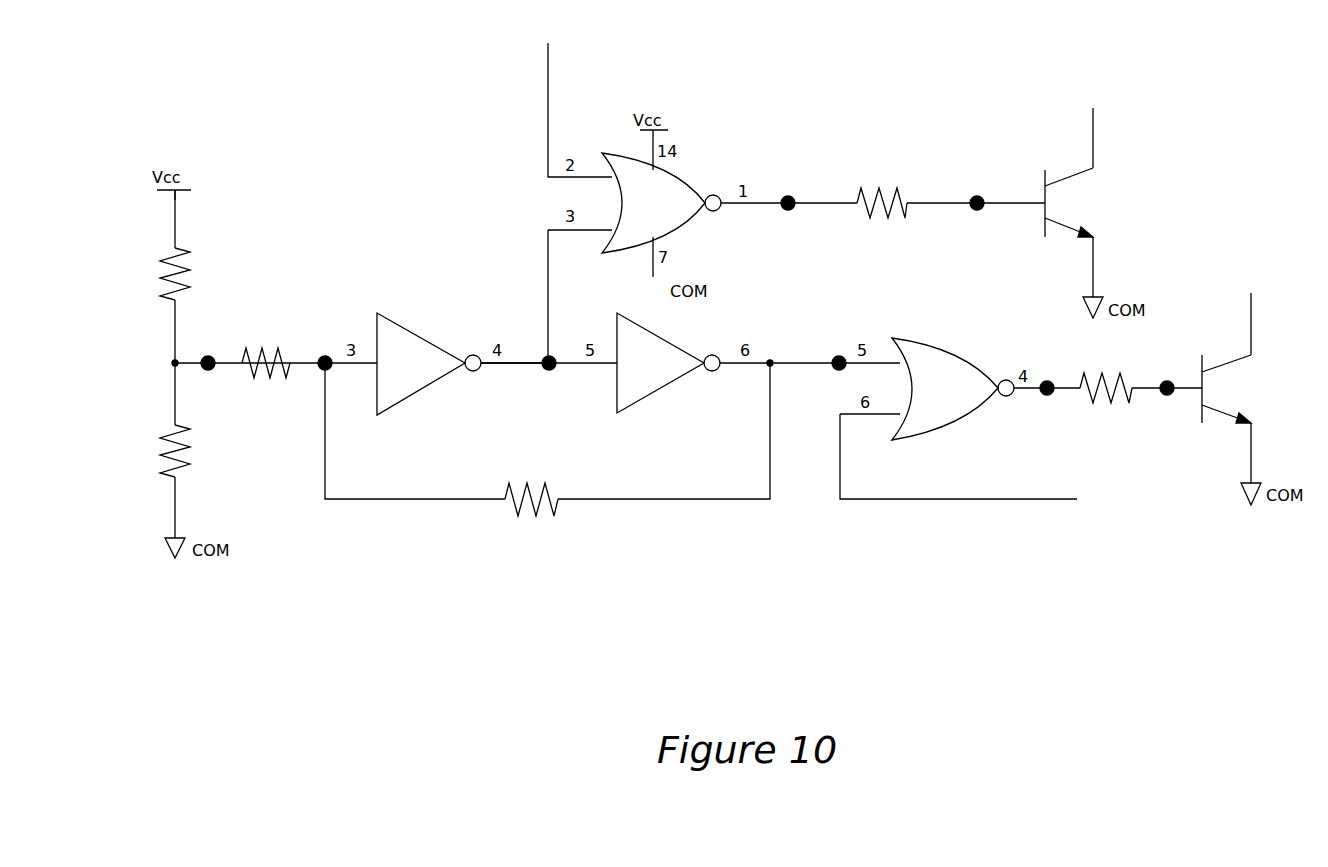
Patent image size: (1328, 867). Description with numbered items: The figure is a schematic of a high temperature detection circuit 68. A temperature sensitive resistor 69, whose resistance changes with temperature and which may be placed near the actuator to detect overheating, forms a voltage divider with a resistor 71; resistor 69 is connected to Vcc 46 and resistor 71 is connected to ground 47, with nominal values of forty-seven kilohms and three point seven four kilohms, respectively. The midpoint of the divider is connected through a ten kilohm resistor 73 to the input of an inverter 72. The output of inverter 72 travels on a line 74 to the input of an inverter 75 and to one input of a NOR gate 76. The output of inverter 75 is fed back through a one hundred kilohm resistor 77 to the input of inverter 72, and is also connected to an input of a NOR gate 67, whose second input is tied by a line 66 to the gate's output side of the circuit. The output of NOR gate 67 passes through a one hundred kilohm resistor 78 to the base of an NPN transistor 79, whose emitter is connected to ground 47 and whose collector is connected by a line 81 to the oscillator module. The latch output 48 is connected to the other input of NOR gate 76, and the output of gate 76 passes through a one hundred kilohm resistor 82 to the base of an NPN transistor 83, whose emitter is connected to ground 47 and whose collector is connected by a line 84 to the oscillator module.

The Vcc 46 is at (170, 191).
The ground 47 is at (170, 550).
The output of latch 48 is at (548, 87).
The feedback line 66 is at (1000, 500).
The NOR gate 67 is at (953, 420).
The circuit 68 is at (855, 62).
The temperature sensitive resistor 69 is at (165, 275).
The resistor 71 is at (165, 455).
The inverter 72 is at (420, 335).
The resistor 73 is at (265, 350).
The line 74 is at (517, 367).
The inverter 75 is at (660, 390).
The NOR gate 76 is at (682, 185).
The resistor 77 is at (540, 505).
The resistor 78 is at (1110, 405).
The NPN transistor 79 is at (1225, 380).
The line 81 is at (1253, 325).
The resistor 82 is at (878, 195).
The NPN transistor 83 is at (1070, 195).
The line 84 is at (1095, 140).